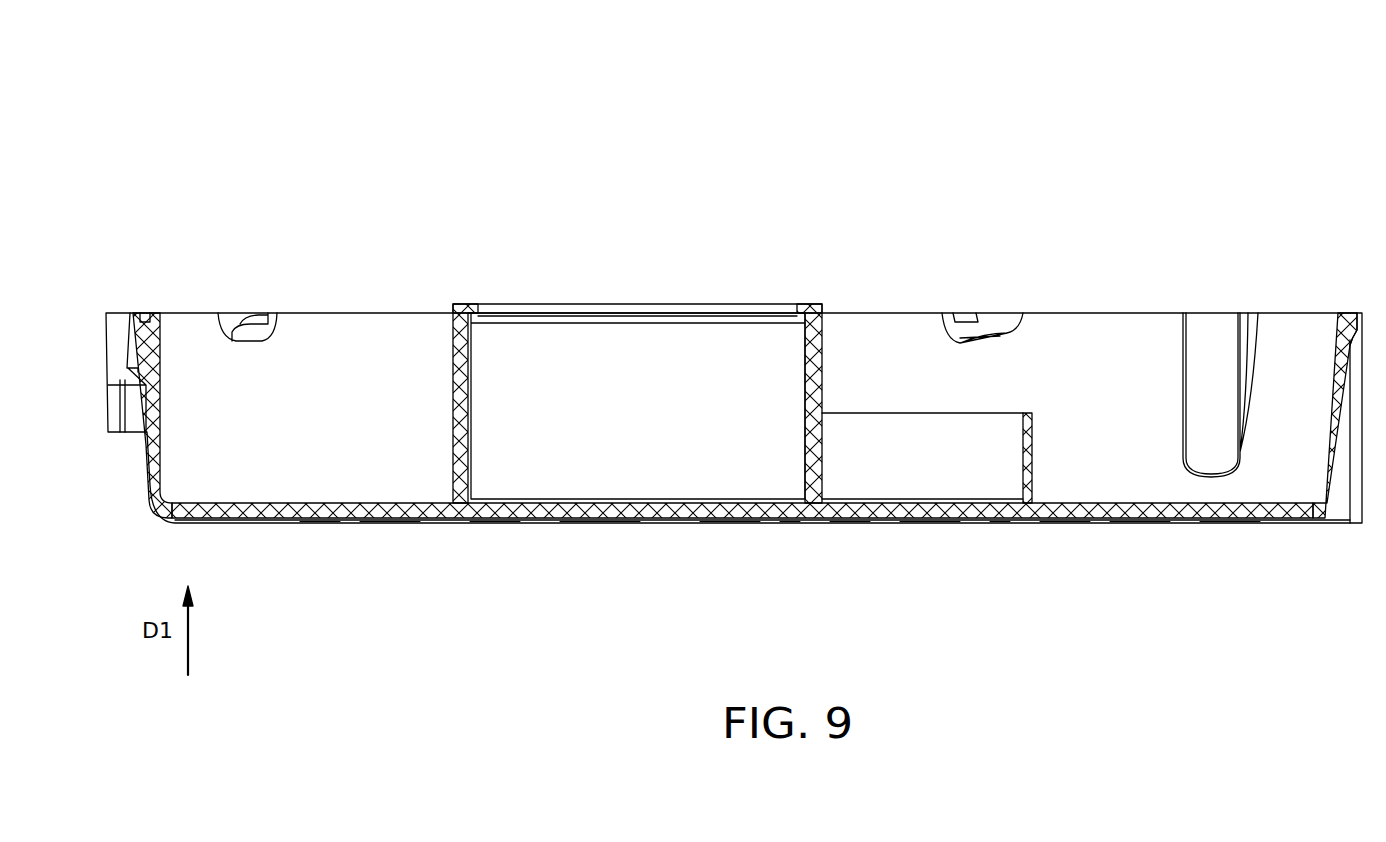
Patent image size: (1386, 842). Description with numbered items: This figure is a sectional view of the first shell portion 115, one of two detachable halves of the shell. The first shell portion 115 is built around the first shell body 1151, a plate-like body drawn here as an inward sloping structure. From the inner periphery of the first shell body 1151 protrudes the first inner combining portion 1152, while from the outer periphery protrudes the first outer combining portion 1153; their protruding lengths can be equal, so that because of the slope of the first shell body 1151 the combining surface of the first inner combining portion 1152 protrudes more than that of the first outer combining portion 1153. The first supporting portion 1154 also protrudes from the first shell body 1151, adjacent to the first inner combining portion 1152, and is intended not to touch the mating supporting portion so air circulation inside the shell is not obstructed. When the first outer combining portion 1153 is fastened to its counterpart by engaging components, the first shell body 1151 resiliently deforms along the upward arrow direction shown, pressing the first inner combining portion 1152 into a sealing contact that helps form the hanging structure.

The first shell portion 115 is at (262, 164).
The first shell body 1151 is at (1210, 515).
The first inner combining portion 1152 is at (472, 304).
The first outer combining portion 1153 is at (148, 333).
The first supporting portion 1154 is at (1027, 482).